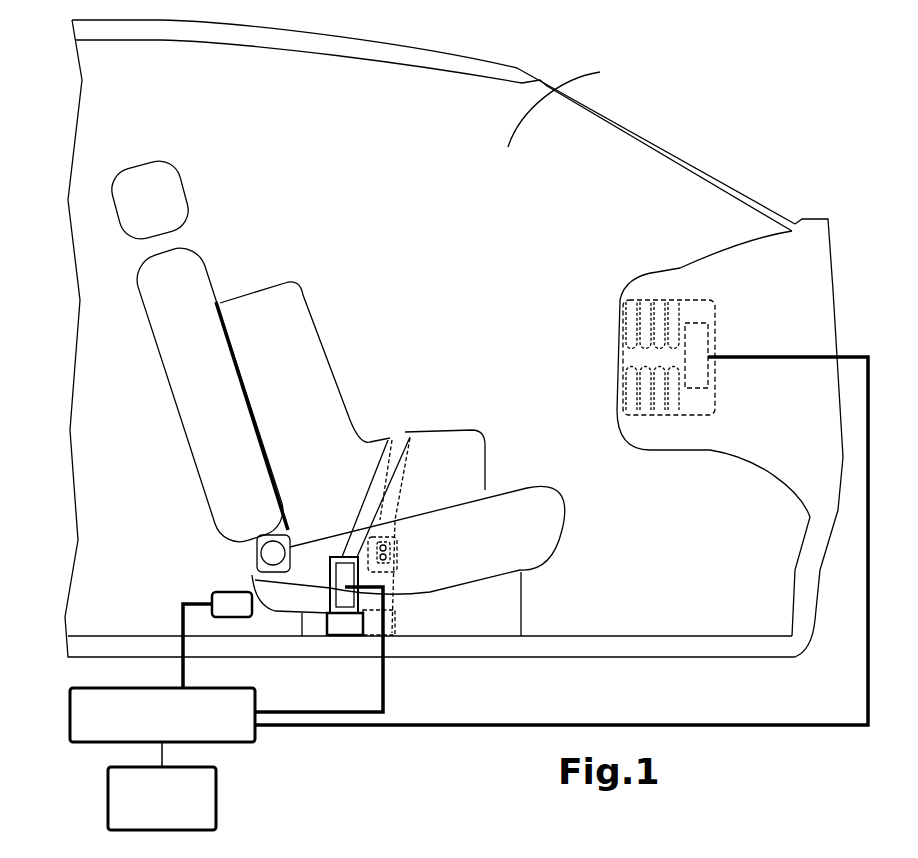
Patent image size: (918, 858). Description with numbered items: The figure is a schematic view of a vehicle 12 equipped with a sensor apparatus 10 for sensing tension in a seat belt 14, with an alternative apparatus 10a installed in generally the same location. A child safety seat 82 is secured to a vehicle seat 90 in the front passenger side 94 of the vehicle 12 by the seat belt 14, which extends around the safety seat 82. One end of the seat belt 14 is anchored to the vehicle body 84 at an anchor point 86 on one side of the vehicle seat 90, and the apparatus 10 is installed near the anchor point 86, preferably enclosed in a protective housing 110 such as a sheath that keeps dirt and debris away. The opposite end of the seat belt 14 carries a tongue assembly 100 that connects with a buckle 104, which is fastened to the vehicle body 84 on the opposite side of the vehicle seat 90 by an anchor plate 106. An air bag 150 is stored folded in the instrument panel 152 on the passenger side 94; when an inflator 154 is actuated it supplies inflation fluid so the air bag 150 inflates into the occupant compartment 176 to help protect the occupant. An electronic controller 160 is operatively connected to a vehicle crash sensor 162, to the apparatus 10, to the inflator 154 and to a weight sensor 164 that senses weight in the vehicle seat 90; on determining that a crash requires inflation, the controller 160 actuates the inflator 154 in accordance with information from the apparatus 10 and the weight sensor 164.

The vehicle 12 is at (713, 147).
The front passenger side 94 is at (568, 155).
The occupant compartment 176 is at (600, 72).
The instrument panel 152 is at (685, 283).
The vehicle body 84 is at (627, 648).
The air bag 150 is at (620, 316).
The inflator 154 is at (713, 332).
The vehicle seat 90 is at (160, 312).
The child safety seat 82 is at (292, 360).
The protective housing 110 is at (330, 530).
The sensor apparatus 10 is at (221, 558).
The sensor apparatus 10a is at (252, 582).
The seat belt 14 is at (375, 487).
The anchor point 86 is at (335, 622).
The tongue assembly 100 is at (397, 533).
The buckle 104 is at (400, 560).
The anchor plate 106 is at (392, 613).
The vehicle crash sensor 162 is at (233, 607).
The electronic controller 160 is at (233, 742).
The weight sensor 164 is at (108, 785).